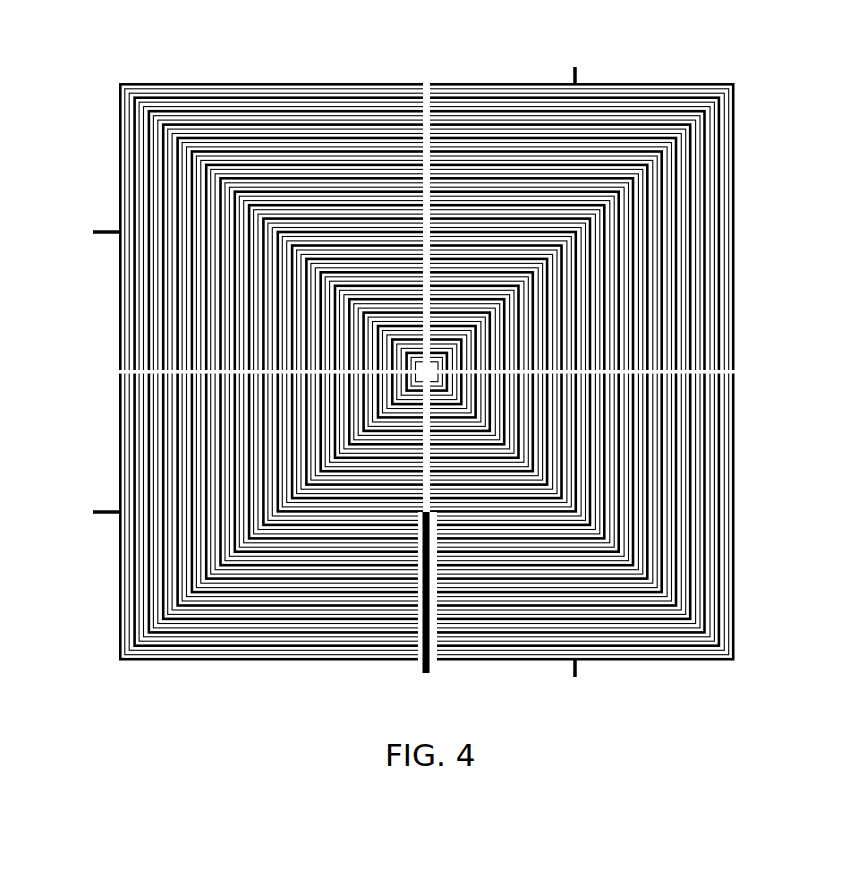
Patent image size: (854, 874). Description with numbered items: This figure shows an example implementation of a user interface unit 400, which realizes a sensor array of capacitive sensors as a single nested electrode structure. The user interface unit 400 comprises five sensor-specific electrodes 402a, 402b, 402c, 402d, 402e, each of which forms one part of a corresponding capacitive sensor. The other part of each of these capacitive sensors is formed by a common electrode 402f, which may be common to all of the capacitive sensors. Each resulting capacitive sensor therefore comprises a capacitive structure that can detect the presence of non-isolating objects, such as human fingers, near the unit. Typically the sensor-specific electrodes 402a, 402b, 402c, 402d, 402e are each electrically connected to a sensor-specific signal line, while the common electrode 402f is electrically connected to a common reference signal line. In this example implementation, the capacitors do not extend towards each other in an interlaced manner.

The user interface unit 400 is at (242, 64).
The sensor-specific electrode 402a is at (102, 229).
The sensor-specific electrode 402b is at (107, 517).
The sensor-specific electrode 402c is at (578, 72).
The sensor-specific electrode 402d is at (578, 672).
The sensor-specific electrode 402e is at (415, 684).
The common electrode 402f is at (128, 372).